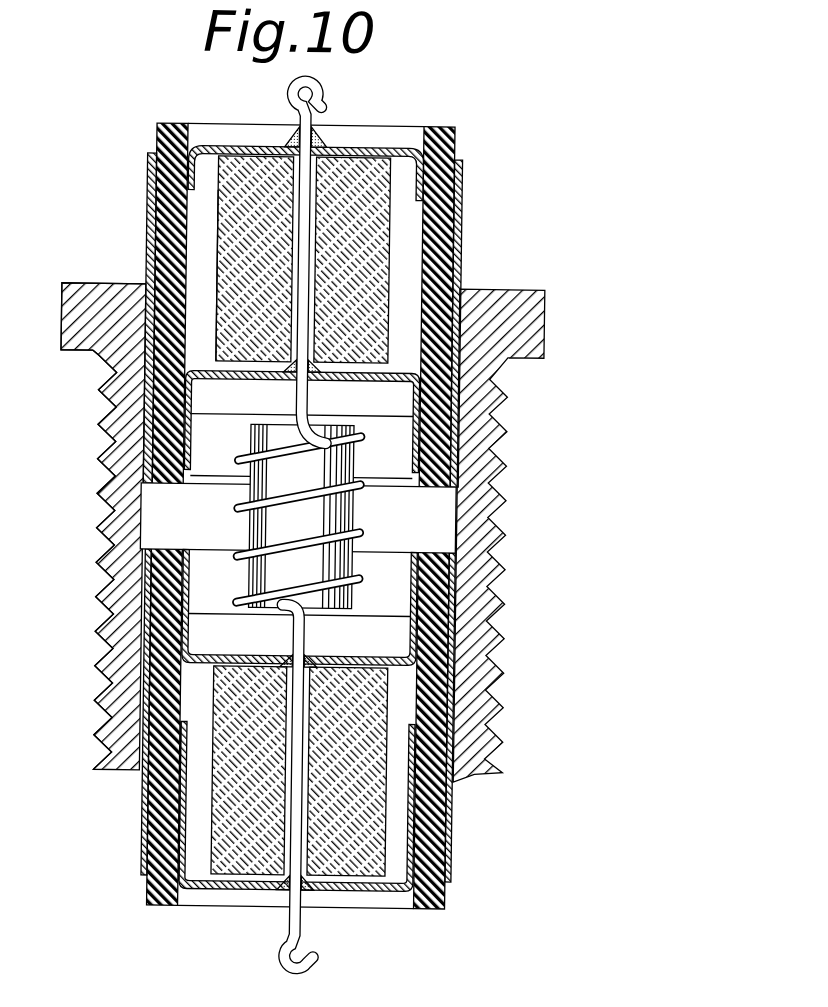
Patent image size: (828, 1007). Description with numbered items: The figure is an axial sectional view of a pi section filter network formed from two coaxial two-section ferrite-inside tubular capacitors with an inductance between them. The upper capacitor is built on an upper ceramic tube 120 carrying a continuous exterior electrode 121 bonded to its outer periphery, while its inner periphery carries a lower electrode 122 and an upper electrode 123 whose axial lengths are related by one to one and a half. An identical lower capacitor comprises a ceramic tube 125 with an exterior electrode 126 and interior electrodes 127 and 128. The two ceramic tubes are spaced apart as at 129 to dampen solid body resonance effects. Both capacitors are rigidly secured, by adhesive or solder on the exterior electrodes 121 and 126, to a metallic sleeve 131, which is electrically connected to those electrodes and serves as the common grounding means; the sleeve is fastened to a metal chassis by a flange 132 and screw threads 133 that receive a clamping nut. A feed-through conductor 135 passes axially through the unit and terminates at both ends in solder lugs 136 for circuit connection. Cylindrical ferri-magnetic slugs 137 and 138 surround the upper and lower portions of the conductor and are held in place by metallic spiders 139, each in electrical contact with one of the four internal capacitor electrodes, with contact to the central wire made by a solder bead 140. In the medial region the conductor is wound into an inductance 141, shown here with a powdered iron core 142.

The upper ceramic tube 120 is at (152, 132).
The exterior electrode 121 is at (144, 202).
The lower electrode 122 is at (192, 449).
The upper electrode 123 is at (186, 230).
The ceramic tube 125 is at (165, 907).
The exterior electrode 126 is at (147, 835).
The interior electrode 127 is at (189, 788).
The interior electrode 128 is at (194, 585).
The spacing 129 is at (298, 518).
The metallic sleeve 131 is at (118, 288).
The flange 132 is at (59, 324).
The screw threads 133 is at (99, 453).
The feed-through conductor 135 is at (257, 149).
The solder lugs 136 is at (317, 95).
The ferri-magnetic slug 137 is at (389, 239).
The ferri-magnetic slug 138 is at (436, 810).
The metallic spiders 139 is at (218, 148).
The solder bead 140 is at (310, 140).
The inductance 141 is at (366, 475).
The powdered iron core 142 is at (359, 449).